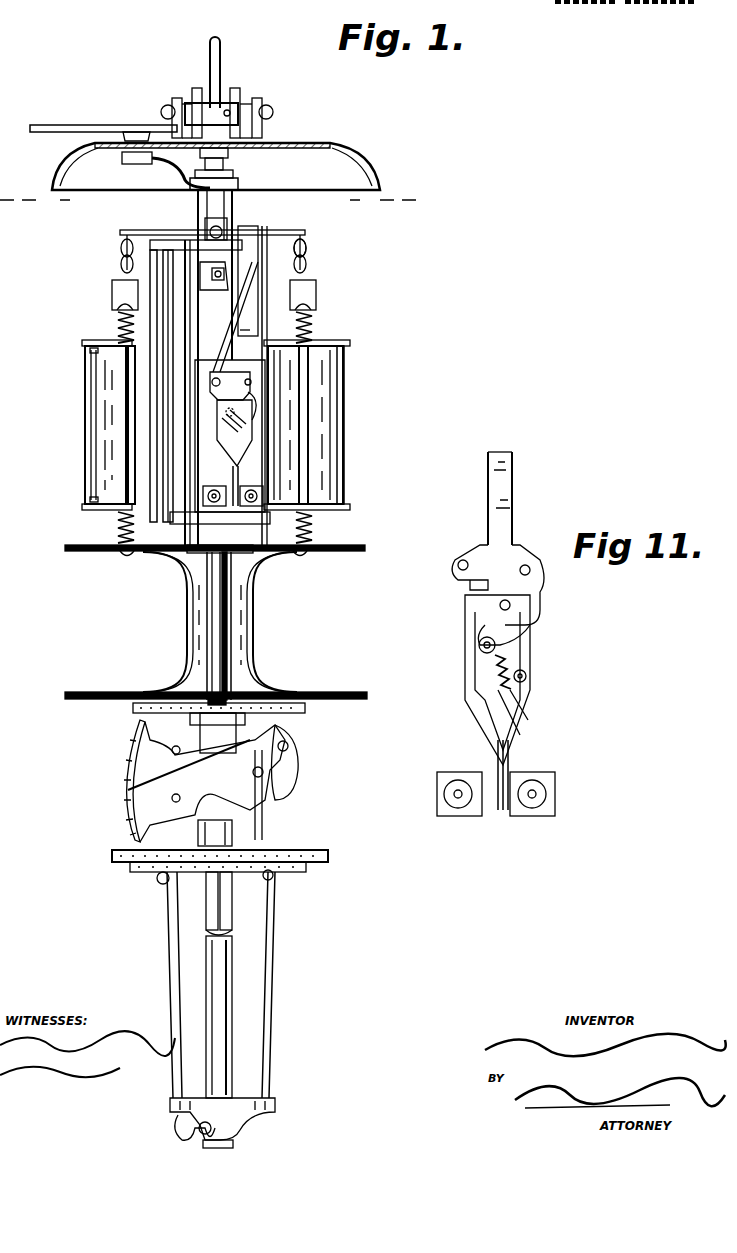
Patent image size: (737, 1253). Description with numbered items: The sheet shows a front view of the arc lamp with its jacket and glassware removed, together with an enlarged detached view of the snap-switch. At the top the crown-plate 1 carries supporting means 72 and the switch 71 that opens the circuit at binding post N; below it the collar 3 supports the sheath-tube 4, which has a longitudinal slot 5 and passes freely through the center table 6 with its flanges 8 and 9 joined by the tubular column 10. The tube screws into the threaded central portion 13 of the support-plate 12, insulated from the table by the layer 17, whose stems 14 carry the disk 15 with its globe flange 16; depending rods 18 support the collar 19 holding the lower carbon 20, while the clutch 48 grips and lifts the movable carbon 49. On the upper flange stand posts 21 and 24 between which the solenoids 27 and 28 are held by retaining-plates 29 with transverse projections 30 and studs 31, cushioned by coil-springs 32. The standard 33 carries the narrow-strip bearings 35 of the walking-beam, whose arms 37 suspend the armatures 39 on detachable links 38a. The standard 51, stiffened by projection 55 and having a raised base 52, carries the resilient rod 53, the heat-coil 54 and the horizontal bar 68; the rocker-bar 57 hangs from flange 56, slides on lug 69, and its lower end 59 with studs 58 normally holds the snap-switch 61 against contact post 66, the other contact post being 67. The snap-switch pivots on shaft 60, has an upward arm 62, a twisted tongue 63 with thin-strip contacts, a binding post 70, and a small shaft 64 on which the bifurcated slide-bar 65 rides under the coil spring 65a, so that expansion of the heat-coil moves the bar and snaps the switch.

In FIG. 1, the crown-plate 1 is at (300, 142).
In FIG. 1, the collar 3 is at (245, 180).
In FIG. 1, the sheath-tube 4 is at (234, 222).
In FIG. 1, the longitudinal slot 5 is at (219, 201).
In FIG. 1, the center table 6 is at (258, 625).
In FIG. 1, the upper flange of center table 8 is at (368, 548).
In FIG. 1, the lower flange of center table 9 is at (370, 693).
In FIG. 1, the tubular column 10 is at (232, 660).
In FIG. 1, the support-plate 12 is at (290, 718).
In FIG. 1, the enlarged central portion 13 is at (222, 733).
In FIG. 1, the stems 14 is at (265, 828).
In FIG. 1, the disk 15 is at (330, 850).
In FIG. 1, the circular flange 16 is at (292, 872).
In FIG. 1, the layer of insulation 17 is at (306, 704).
In FIG. 1, the depending rods 18 is at (172, 945).
In FIG. 1, the collar 19 is at (235, 1120).
In FIG. 1, the lower carbon 20 is at (212, 1010).
In FIG. 1, the post 21 is at (128, 378).
In FIG. 1, the post 24 is at (308, 398).
In FIG. 1, the solenoid 27 is at (90, 440).
In FIG. 1, the solenoid 28 is at (345, 440).
In FIG. 1, the retaining-plates 29 is at (340, 338).
In FIG. 1, the transverse projections 30 is at (117, 340).
In FIG. 1, the vertical studs 31 is at (348, 348).
In FIG. 1, the coil-springs 32 is at (318, 528).
In FIG. 1, the standard 33 is at (214, 285).
In FIG. 1, the narrow-strip bearings 35 is at (205, 245).
In FIG. 1, the arms of walking-beam 37 is at (300, 232).
In FIG. 1, the detachable links 38a is at (306, 258).
In FIG. 1, the armatures 39 is at (112, 294).
In FIG. 1, the clutch 48 is at (205, 880).
In FIG. 1, the movable carbon 49 is at (232, 890).
In FIG. 1, the standard 51 is at (230, 436).
In FIG. 1, the base portion 52 is at (210, 545).
In FIG. 1, the resilient rod 53 is at (190, 470).
In FIG. 1, the heat-coil 54 is at (163, 386).
In FIG. 1, the projection 55 is at (200, 248).
In FIG. 1, the flange 56 is at (255, 230).
In FIG. 1, the rocker-bar 57 is at (238, 317).
In FIG. 11, the rocker-bar 57 is at (505, 495).
In FIG. 11, the studs 58 is at (530, 572).
In FIG. 11, the lower end of rocker-bar 59 is at (535, 635).
In FIG. 11, the shaft 60 is at (500, 605).
In FIG. 1, the snap-switch 61 is at (220, 432).
In FIG. 11, the snap-switch 61 is at (470, 672).
In FIG. 11, the upwardly extending arm 62 is at (512, 548).
In FIG. 11, the tongue 63 is at (500, 810).
In FIG. 11, the small shaft 64 is at (520, 696).
In FIG. 11, the slide-bar 65 is at (528, 674).
In FIG. 11, the coil spring 65a is at (505, 660).
In FIG. 1, the contact post 66 is at (251, 489).
In FIG. 11, the contact post 66 is at (545, 818).
In FIG. 1, the contact post 67 is at (214, 489).
In FIG. 11, the contact post 67 is at (455, 818).
In FIG. 1, the horizontal bar 68 is at (200, 250).
In FIG. 1, the lug 69 is at (250, 322).
In FIG. 11, the binding post 70 is at (530, 678).
In FIG. 1, the switch 71 is at (162, 182).
In FIG. 1, the supporting means 72 is at (219, 88).
In FIG. 1, the binding post N is at (232, 108).